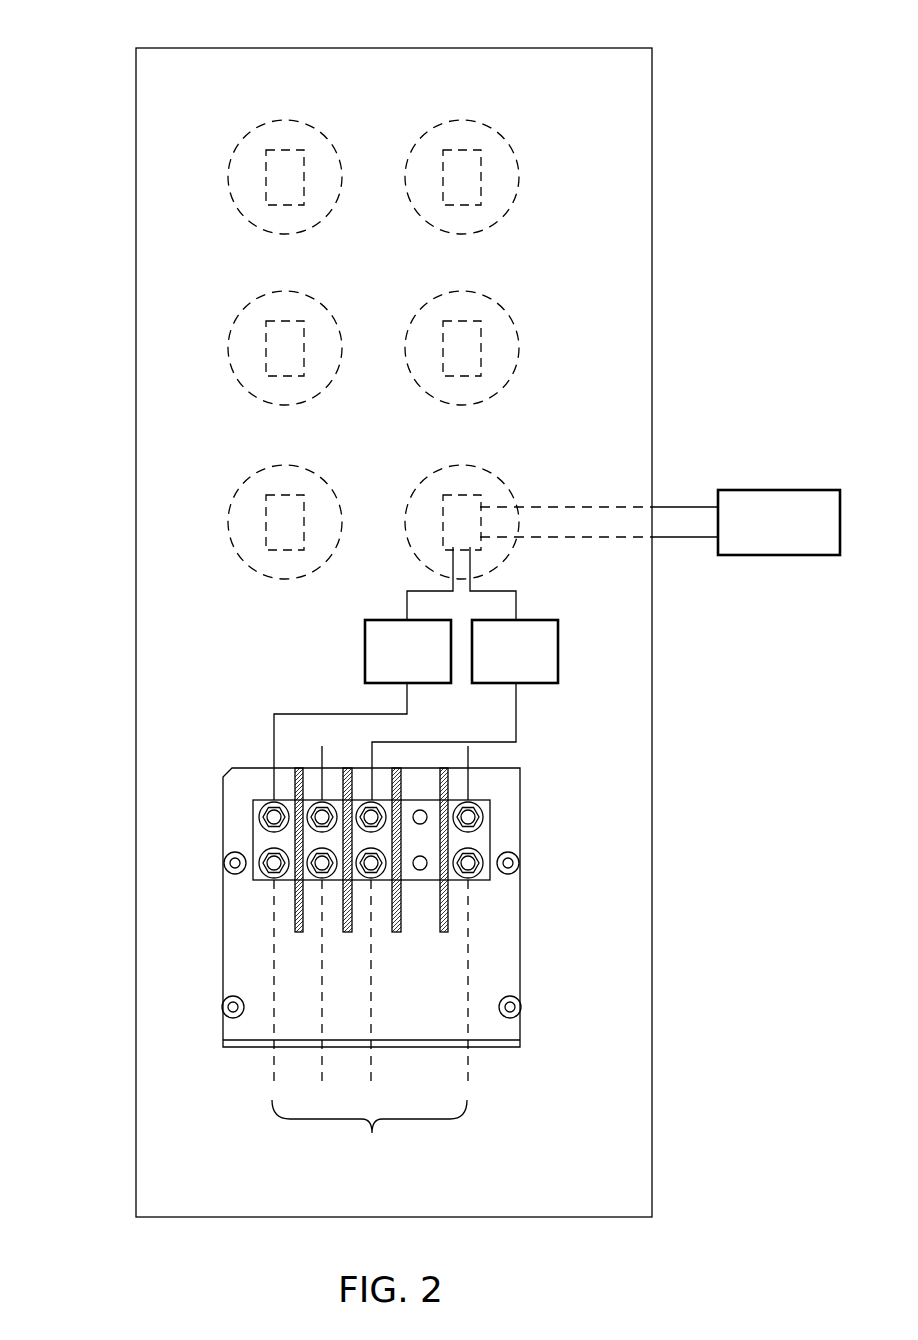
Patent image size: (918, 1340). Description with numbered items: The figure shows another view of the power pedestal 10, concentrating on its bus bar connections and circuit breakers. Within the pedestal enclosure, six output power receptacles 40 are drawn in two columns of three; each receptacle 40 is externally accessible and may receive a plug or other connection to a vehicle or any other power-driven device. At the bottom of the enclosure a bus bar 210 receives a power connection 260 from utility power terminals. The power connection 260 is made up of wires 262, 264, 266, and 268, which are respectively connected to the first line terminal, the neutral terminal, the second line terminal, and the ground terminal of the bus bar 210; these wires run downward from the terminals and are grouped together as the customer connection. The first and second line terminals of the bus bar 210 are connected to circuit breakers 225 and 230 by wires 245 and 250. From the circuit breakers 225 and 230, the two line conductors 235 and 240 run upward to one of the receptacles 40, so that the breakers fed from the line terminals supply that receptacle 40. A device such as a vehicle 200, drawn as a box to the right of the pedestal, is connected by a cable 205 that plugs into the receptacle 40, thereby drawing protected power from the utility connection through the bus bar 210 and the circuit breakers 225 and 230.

The power pedestal 10 is at (70, 98).
The output power receptacle 40 is at (285, 120).
The vehicle 200 is at (780, 490).
The cable 205 is at (685, 507).
The bus bar 210 is at (520, 814).
The circuit breaker 225 is at (365, 654).
The circuit breaker 230 is at (558, 654).
The first outlet conductor 235 is at (407, 611).
The second outlet conductor 240 is at (516, 611).
The wire 245 is at (274, 742).
The wire 250 is at (516, 720).
The power connection 260 is at (466, 1115).
The wire 262 is at (272, 1062).
The wire 264 is at (325, 1062).
The wire 266 is at (372, 980).
The wire 268 is at (467, 1000).